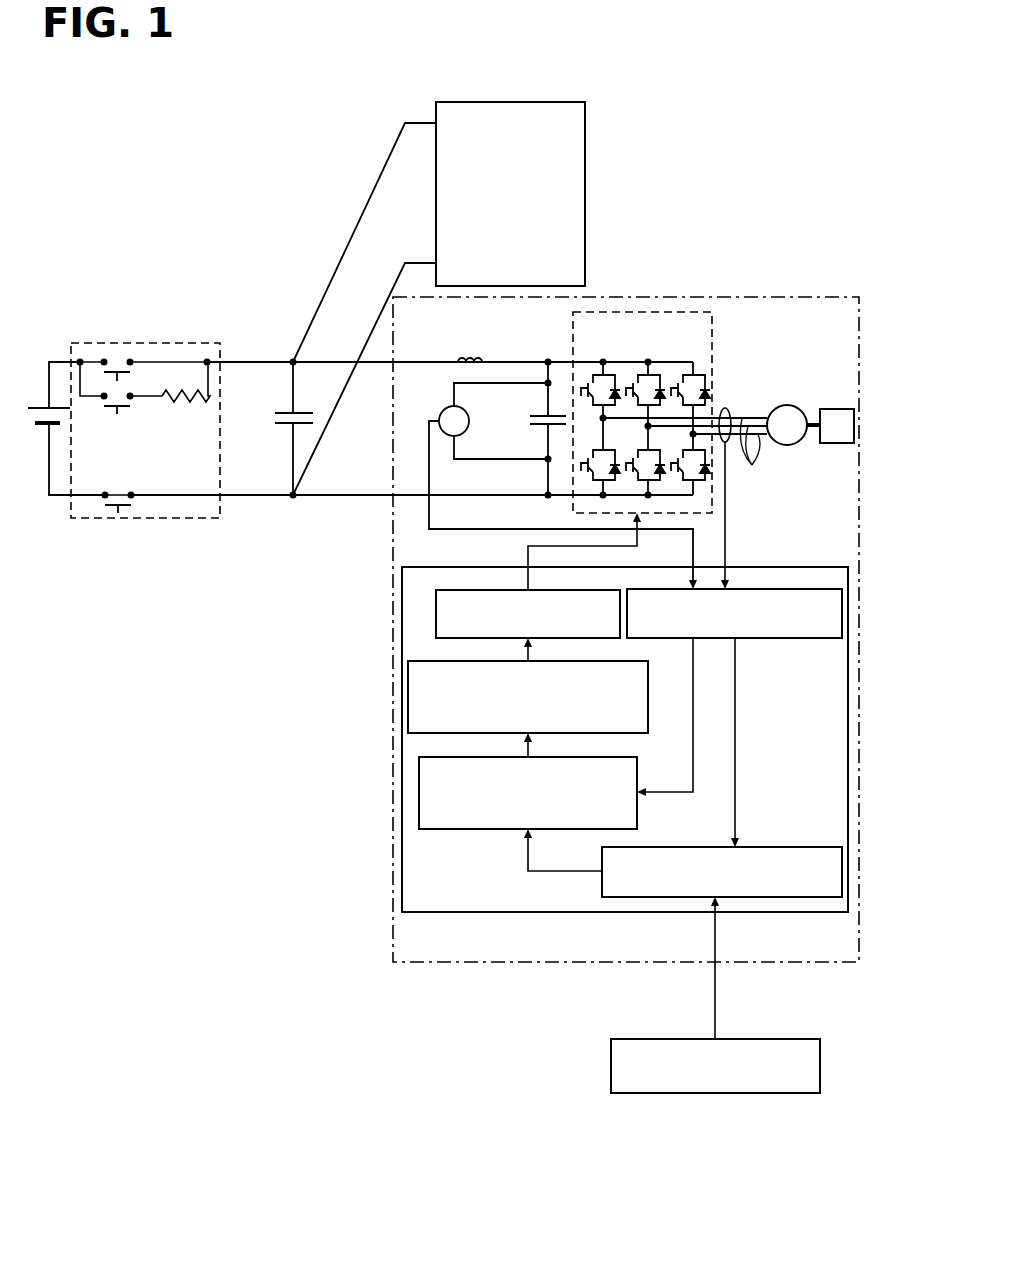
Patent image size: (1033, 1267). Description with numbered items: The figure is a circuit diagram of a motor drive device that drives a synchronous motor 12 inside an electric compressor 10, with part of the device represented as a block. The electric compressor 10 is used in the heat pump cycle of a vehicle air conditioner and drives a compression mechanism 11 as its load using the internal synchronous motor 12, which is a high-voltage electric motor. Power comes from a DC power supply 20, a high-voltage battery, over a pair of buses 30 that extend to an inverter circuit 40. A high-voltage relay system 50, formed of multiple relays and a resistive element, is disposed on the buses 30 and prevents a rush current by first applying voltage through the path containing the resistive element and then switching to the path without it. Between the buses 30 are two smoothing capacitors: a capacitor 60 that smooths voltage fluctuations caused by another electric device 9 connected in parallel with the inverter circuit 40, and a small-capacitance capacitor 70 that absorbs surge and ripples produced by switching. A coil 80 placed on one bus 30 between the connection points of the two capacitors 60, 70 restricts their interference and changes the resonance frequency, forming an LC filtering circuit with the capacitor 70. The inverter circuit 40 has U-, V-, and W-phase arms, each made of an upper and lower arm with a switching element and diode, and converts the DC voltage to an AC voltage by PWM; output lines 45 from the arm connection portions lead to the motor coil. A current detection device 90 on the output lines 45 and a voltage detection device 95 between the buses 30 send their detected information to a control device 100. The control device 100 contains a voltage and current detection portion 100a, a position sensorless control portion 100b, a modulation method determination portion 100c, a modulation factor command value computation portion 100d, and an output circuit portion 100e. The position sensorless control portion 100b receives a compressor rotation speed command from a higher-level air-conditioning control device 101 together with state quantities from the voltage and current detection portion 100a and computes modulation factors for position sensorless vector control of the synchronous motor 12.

The electric device 9 is at (536, 102).
The electric compressor 10 is at (735, 297).
The compression mechanism 11 is at (838, 409).
The synchronous motor 12 is at (787, 405).
The DC power supply 20 is at (34, 409).
The buses 30 is at (366, 365).
The inverter circuit 40 is at (684, 311).
The output lines 45 is at (753, 455).
The high-voltage relay system 50 is at (194, 342).
The capacitor 60 is at (288, 412).
The capacitor 70 is at (541, 416).
The coil 80 is at (473, 351).
The current detection device 90 is at (727, 408).
The voltage detection device 95 is at (444, 406).
The control device 100 is at (610, 914).
The voltage and current detection portion 100a is at (765, 589).
The position sensorless control portion 100b is at (758, 899).
The modulation method determination portion 100c is at (419, 790).
The modulation factor command value computation portion 100d is at (408, 703).
The output circuit portion 100e is at (436, 618).
The air-conditioning control device 101 is at (710, 1096).